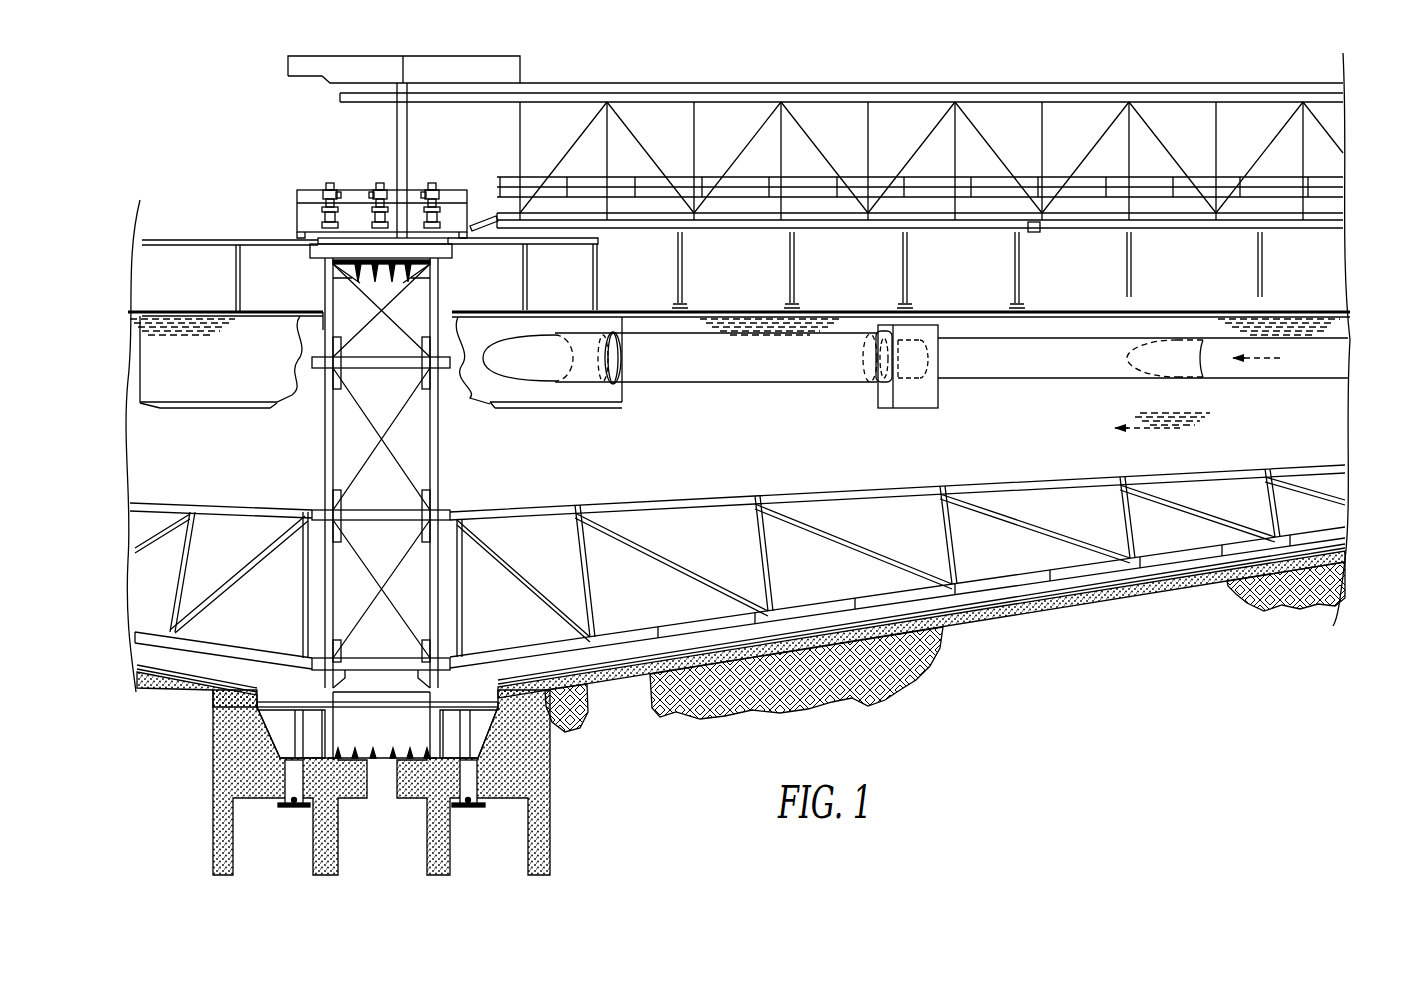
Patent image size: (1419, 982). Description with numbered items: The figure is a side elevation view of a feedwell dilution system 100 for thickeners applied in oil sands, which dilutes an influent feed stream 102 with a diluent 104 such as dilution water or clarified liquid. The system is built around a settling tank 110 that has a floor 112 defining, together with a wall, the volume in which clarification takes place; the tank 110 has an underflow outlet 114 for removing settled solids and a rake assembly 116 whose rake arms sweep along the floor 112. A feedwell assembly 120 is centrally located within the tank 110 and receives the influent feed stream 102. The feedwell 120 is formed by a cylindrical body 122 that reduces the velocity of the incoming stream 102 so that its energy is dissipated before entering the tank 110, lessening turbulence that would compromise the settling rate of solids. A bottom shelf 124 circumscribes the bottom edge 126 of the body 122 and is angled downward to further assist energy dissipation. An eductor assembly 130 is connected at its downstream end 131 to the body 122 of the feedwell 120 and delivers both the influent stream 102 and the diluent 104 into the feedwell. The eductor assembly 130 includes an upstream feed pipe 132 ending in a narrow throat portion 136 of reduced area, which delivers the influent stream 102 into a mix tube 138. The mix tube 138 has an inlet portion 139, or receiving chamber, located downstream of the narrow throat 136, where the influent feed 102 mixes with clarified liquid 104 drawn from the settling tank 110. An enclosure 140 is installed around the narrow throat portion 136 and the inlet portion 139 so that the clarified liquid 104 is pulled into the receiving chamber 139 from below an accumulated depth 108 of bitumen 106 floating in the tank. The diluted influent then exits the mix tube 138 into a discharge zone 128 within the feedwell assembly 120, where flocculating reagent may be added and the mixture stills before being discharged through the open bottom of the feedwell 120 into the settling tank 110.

The feedwell dilution system 100 is at (262, 152).
The influent feed stream 102 is at (1262, 362).
The diluent 104 is at (1172, 430).
The bitumen 106 is at (1300, 323).
The accumulated depth 108 is at (1318, 340).
The settling tank 110 is at (1103, 650).
The floor 112 is at (990, 621).
The underflow outlet 114 is at (475, 684).
The rake assembly 116 is at (600, 494).
The feedwell assembly 120 is at (628, 397).
The cylindrical body 122 is at (140, 372).
The bottom shelf 124 is at (150, 408).
The bottom edge 126 is at (157, 425).
The discharge zone 128 is at (546, 393).
The eductor assembly 130 is at (935, 387).
The downstream end 131 is at (527, 392).
The upstream feed pipe 132 is at (1063, 380).
The narrow throat portion 136 is at (876, 332).
The mix tube 138 is at (773, 383).
The inlet portion 139 is at (876, 386).
The enclosure 140 is at (905, 409).